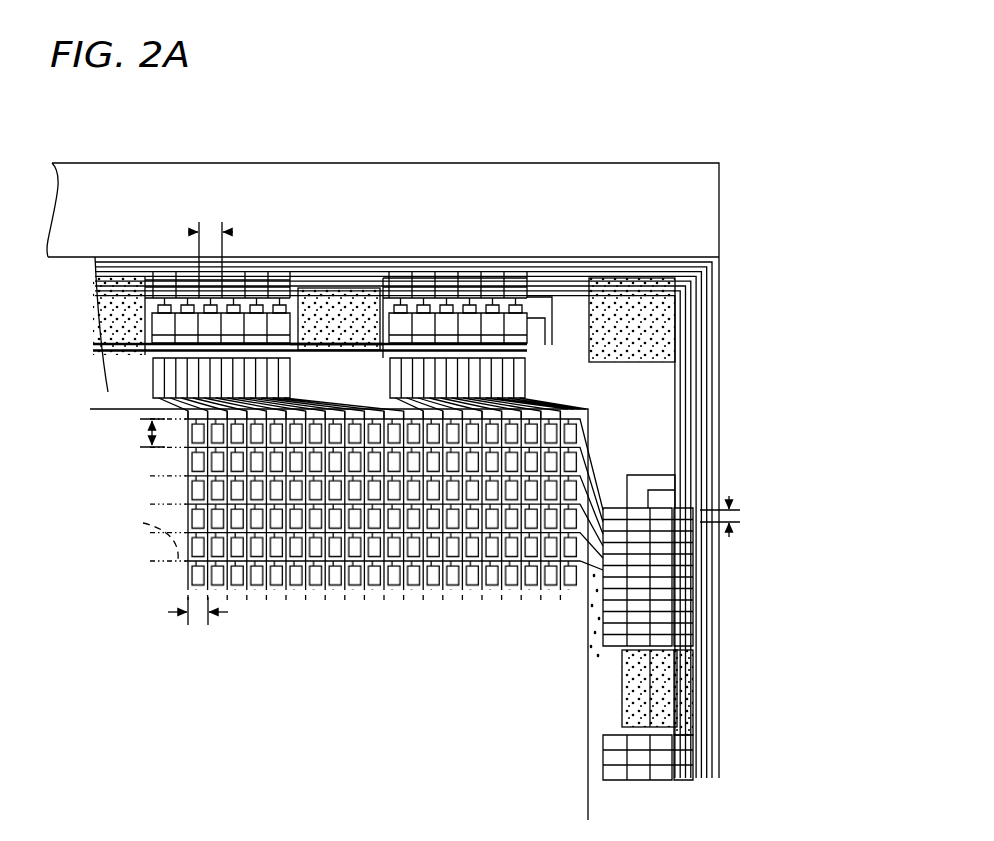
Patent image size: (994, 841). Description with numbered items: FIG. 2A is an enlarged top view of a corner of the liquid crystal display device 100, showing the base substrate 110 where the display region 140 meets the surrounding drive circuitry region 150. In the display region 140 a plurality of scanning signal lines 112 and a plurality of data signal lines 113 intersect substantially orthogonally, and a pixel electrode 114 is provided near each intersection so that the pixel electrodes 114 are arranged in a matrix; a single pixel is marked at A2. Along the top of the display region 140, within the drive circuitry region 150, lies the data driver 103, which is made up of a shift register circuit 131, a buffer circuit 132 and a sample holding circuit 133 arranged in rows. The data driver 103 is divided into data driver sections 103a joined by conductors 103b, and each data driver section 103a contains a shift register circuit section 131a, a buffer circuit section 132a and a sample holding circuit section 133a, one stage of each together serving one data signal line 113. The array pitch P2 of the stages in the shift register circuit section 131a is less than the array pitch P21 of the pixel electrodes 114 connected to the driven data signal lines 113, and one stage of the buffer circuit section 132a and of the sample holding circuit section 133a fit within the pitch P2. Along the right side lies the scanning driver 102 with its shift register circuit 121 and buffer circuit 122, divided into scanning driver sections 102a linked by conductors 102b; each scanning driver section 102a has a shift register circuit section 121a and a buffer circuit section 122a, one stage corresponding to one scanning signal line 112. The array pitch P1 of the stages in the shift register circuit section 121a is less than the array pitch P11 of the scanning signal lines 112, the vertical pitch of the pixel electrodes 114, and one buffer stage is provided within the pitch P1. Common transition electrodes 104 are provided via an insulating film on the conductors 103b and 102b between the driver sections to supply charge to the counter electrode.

The liquid crystal display device 100 is at (444, 419).
The base substrate 110 is at (728, 279).
The data driver 103 is at (283, 60).
The data driver section 103a is at (580, 116).
The conductor 103b is at (364, 356).
The common transition electrode 104 is at (145, 300).
The shift register circuit 131 is at (72, 280).
The buffer circuit 132 is at (72, 315).
The sample holding circuit 133 is at (72, 360).
The shift register circuit section 131a is at (401, 275).
The buffer circuit section 132a is at (441, 320).
The sample holding circuit section 133a is at (486, 380).
The display region 140 is at (319, 560).
The scanning signal line 112 is at (165, 561).
The data signal line 113 is at (425, 603).
The pixel electrode 114 is at (456, 586).
The drive circuitry region 150 is at (650, 433).
The scanning driver 102 is at (716, 659).
The scanning driver section 102a is at (783, 563).
The conductor 102b is at (675, 700).
The shift register circuit 121 is at (730, 665).
The buffer circuit 122 is at (696, 665).
The shift register circuit section 121a is at (684, 583).
The buffer circuit section 122a is at (633, 606).
The array pitch P1 is at (734, 516).
The array pitch P2 is at (210, 232).
The array pitch P11 is at (150, 437).
The array pitch P21 is at (198, 629).
The pixel region A2 is at (149, 524).